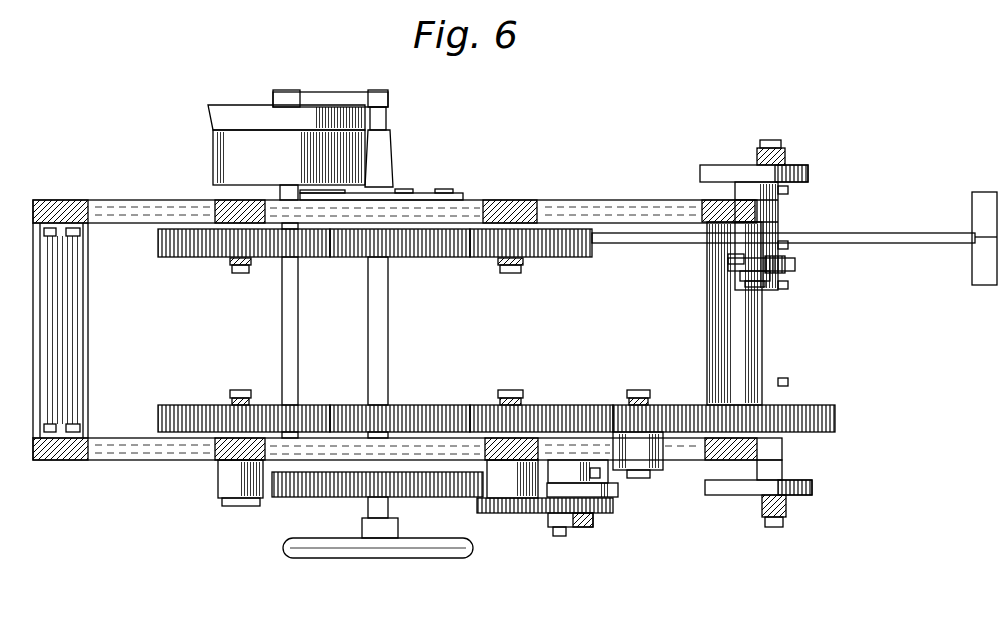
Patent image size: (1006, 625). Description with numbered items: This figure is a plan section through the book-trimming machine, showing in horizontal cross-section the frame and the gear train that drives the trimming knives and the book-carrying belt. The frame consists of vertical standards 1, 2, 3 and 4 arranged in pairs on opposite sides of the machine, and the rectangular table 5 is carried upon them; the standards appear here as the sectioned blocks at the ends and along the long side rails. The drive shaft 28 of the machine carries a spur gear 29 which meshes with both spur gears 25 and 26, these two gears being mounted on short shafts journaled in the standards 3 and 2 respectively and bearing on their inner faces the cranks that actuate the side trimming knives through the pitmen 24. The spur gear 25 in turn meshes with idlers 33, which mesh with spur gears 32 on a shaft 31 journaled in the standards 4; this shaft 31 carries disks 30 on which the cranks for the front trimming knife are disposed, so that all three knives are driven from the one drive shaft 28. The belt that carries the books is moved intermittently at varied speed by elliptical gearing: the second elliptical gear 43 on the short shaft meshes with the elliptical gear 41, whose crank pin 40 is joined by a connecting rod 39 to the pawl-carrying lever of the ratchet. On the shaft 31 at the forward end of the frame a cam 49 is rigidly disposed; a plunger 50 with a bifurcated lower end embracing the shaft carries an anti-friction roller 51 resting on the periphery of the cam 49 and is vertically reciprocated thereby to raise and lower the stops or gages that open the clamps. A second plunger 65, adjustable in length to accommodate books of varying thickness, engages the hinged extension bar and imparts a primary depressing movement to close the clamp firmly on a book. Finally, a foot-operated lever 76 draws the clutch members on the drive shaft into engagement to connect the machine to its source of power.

The vertical standard 1 is at (58, 206).
The vertical standard 2 is at (232, 226).
The vertical standard 3 is at (216, 462).
The vertical standard 4 is at (510, 201).
The rectangular table 5 is at (712, 199).
The pitman 24 is at (786, 156).
The spur gear 25 is at (574, 258).
The spur gear 26 is at (165, 259).
The drive shaft 28 is at (387, 336).
The spur gear 29 is at (423, 259).
The disk 30 is at (809, 173).
The shaft 31 is at (764, 335).
The spur gear 32 is at (836, 418).
The idler 33 is at (663, 408).
The connecting rod 39 is at (590, 520).
The crank pin 40 is at (560, 537).
The elliptical gear 41 is at (613, 508).
The second elliptical gear 43 is at (509, 514).
The cam 49 is at (796, 264).
The plunger 50 is at (745, 278).
The anti-friction roller 51 is at (733, 263).
The plunger 65 is at (604, 468).
The foot-operated lever 76 is at (973, 273).